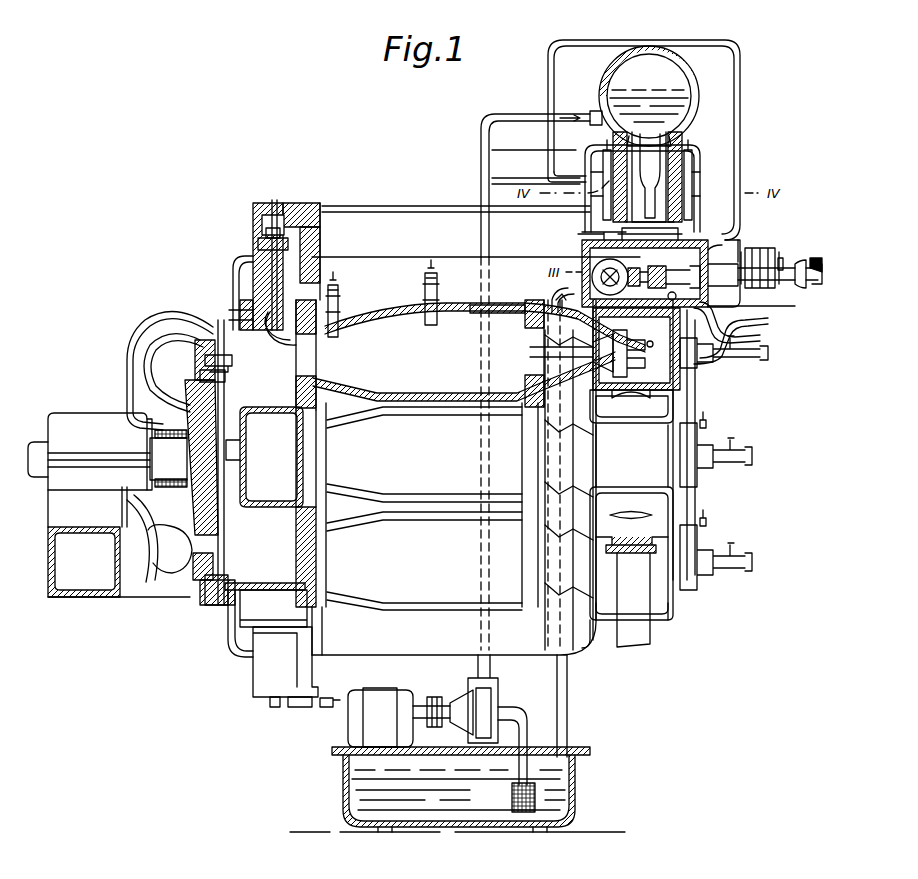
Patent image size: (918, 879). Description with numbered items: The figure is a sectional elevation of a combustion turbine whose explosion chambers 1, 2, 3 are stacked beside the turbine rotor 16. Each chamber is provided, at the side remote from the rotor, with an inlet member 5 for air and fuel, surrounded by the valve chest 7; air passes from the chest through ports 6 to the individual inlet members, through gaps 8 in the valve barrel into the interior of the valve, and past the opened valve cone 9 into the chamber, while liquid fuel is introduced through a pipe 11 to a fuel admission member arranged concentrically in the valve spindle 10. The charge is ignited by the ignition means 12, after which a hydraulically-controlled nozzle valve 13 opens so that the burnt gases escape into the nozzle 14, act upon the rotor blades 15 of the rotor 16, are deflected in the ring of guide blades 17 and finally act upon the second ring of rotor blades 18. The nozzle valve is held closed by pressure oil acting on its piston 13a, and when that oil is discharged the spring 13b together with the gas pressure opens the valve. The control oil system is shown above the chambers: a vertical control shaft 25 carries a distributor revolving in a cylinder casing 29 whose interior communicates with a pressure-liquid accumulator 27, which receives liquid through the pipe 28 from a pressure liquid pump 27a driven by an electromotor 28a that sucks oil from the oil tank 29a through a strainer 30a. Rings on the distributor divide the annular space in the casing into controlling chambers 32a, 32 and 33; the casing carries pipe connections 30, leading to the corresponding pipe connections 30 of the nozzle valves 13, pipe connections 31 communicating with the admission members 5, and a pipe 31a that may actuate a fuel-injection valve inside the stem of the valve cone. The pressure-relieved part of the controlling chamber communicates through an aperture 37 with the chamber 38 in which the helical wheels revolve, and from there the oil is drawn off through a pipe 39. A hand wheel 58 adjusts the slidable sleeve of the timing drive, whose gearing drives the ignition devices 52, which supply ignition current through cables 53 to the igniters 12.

The explosion chamber 1 is at (470, 428).
The explosion chamber 2 is at (417, 505).
The explosion chamber 3 is at (454, 477).
The inlet member 5 is at (665, 358).
The port 6 is at (665, 412).
The valve chest 7 is at (648, 395).
The gap 8 is at (645, 347).
The valve cone 9 is at (590, 353).
The valve spindle 10 is at (636, 349).
The pipe 11 is at (750, 352).
The ignition means 12 is at (430, 270).
The nozzle valve 13 is at (280, 340).
The piston 13a is at (256, 245).
The spring 13b is at (232, 274).
The nozzle 14 is at (216, 338).
The rotor blades 15 is at (214, 350).
The rotor 16 is at (205, 457).
The ring of guide blades 17 is at (206, 588).
The second ring of rotor blades 18 is at (198, 372).
The vertical control shaft 25 is at (680, 258).
The pressure-liquid accumulator 27 is at (674, 102).
The pressure liquid pump 27a is at (488, 707).
The pipe 28 is at (574, 116).
The electromotor 28a is at (382, 700).
The cylinder casing 29 is at (676, 204).
The oil tank 29a is at (560, 790).
The pipe connection 30 is at (322, 212).
The strainer 30a is at (512, 808).
The pipe connection 31 is at (736, 305).
The pipe 31a is at (742, 150).
The controlling chamber 32 is at (605, 172).
The controlling chamber 32a is at (700, 170).
The controlling chamber 33 is at (592, 236).
The aperture 37 is at (582, 252).
The chamber 38 is at (730, 258).
The pipe 39 is at (566, 289).
The ignition device 52 is at (750, 256).
The cable 53 is at (782, 256).
The hand wheel 58 is at (798, 286).